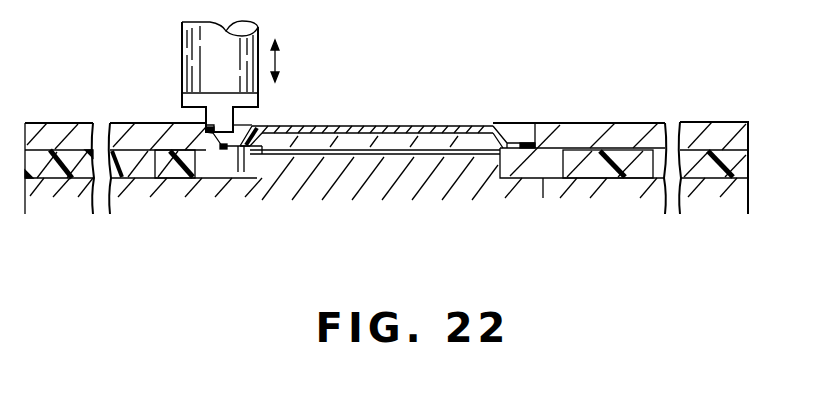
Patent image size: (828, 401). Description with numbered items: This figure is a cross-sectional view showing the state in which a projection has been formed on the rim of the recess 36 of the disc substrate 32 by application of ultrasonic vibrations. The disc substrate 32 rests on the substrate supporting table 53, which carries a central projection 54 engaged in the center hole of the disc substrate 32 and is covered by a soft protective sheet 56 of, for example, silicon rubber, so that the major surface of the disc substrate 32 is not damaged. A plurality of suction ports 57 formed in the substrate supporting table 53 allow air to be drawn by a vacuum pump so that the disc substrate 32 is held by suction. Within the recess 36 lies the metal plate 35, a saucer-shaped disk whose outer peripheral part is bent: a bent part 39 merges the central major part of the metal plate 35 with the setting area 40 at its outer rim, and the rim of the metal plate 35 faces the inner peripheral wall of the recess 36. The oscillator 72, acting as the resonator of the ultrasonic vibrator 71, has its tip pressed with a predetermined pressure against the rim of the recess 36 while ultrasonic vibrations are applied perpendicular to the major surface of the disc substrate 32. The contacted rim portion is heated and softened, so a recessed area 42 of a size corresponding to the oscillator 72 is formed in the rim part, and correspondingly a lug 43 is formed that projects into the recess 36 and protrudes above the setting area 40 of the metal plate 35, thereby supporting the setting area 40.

The ultrasonic vibrator 71 is at (188, 62).
The oscillator 72 is at (218, 128).
The bent part 39 is at (251, 124).
The metal plate 35 is at (355, 125).
The central projection 54 is at (412, 148).
The setting area 40 is at (522, 143).
The disc substrate 32 is at (614, 100).
The protective sheet 56 is at (750, 162).
The substrate supporting table 53 is at (742, 196).
The suction ports 57 is at (520, 178).
The recessed area 42 is at (213, 134).
The lug 43 is at (235, 148).
The recess 36 is at (263, 150).